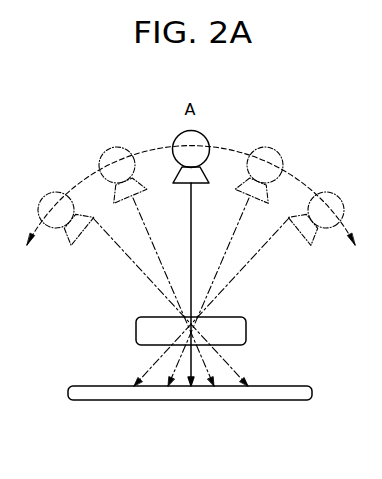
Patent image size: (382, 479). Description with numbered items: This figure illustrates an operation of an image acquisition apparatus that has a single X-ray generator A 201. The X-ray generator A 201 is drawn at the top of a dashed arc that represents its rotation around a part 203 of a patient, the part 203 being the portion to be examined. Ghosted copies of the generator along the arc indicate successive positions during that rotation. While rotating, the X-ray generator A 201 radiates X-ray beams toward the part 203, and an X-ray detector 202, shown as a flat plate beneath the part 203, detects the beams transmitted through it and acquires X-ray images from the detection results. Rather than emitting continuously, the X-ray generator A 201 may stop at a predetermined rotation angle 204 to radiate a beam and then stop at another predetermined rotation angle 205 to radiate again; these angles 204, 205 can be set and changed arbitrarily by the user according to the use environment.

The X-ray generator A 201 is at (206, 140).
The X-ray detector 202 is at (287, 401).
The part of a patient 203 is at (248, 330).
The predetermined rotation angle 204 is at (191, 243).
The another predetermined rotation angle 205 is at (243, 220).